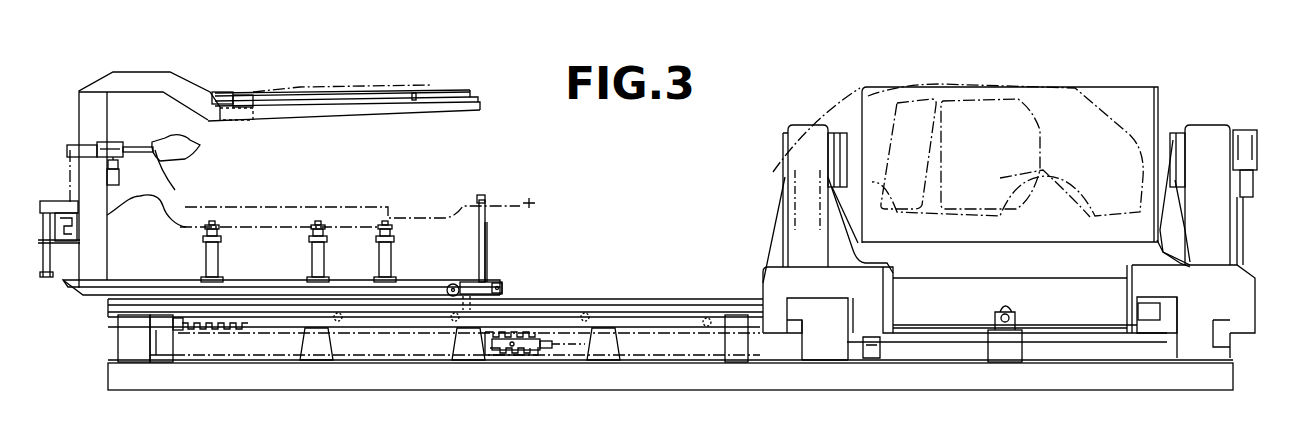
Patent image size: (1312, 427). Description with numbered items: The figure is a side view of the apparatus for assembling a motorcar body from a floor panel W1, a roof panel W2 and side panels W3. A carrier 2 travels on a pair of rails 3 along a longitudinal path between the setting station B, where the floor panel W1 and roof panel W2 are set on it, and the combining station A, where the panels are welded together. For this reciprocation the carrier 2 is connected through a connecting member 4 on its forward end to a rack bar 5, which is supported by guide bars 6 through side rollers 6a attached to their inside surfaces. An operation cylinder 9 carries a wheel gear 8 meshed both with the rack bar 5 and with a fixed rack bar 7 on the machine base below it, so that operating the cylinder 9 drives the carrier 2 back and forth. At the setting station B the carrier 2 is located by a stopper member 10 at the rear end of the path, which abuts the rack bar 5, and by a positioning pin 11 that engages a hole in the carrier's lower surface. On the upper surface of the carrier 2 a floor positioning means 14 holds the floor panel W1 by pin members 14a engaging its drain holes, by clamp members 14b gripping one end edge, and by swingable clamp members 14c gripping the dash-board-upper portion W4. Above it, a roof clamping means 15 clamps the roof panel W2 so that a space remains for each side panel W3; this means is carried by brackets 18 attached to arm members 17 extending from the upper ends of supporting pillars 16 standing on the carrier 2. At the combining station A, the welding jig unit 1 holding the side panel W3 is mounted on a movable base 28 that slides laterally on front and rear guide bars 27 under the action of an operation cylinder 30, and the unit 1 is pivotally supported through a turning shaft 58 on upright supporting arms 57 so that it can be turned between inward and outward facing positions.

The welding jig unit 1 is at (1125, 85).
The carrier 2 is at (262, 287).
The rail 3 is at (594, 300).
The connecting member 4 is at (505, 296).
The rack bar 5 is at (230, 332).
The guide bar 6 is at (388, 322).
The side roller 6a is at (705, 318).
The rack bar 7 is at (510, 357).
The wheel gear 8 is at (505, 352).
The operation cylinder 9 is at (942, 343).
The stopper member 10 is at (170, 322).
The positioning pin 11 is at (460, 285).
The floor positioning means 14 is at (228, 236).
The pin member 14a is at (383, 218).
The clamp member 14b is at (68, 204).
The swingable clamp member 14c is at (176, 146).
The roof clamping means 15 is at (232, 92).
The supporting pillar 16 is at (92, 108).
The arm member 17 is at (152, 82).
The bracket 18 is at (331, 112).
The guide bar 27 is at (822, 312).
The movable base 28 is at (785, 278).
The operation cylinder 30 is at (1012, 335).
The supporting arm 57 is at (800, 130).
The turning shaft 58 is at (838, 137).
The combining station A is at (925, 85).
The setting station B is at (423, 230).
The floor panel W1 is at (536, 203).
The roof panel W2 is at (280, 90).
The side panel W3 is at (1043, 96).
The dash-board-upper portion W4 is at (166, 135).